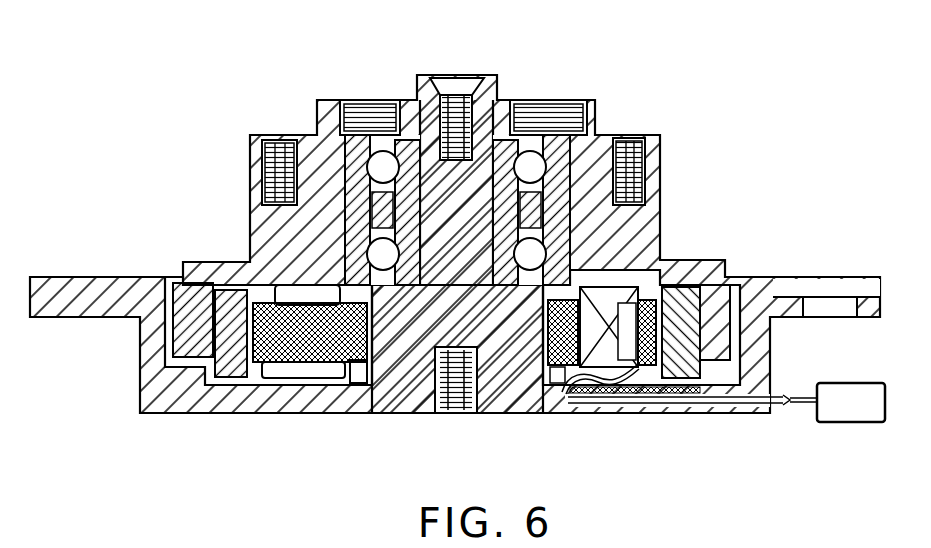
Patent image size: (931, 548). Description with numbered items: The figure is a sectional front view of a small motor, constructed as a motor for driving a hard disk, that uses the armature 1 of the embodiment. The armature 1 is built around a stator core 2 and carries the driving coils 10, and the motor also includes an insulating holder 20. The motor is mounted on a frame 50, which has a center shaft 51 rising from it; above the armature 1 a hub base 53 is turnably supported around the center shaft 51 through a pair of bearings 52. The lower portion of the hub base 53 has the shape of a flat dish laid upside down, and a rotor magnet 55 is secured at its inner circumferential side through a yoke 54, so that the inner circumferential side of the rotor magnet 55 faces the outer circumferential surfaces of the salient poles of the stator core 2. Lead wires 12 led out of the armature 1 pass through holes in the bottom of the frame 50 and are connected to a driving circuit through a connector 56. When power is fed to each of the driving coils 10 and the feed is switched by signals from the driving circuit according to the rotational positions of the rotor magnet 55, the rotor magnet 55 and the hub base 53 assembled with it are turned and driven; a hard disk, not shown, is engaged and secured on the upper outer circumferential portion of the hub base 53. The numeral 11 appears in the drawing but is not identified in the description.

The armature 1 is at (347, 372).
The stator core 2 is at (383, 358).
The driving coils 10 is at (293, 378).
The sensor element 11 is at (657, 262).
The lead wires 12 is at (568, 403).
The insulating holder 20 is at (665, 282).
The frame 50 is at (407, 378).
The center shaft 51 is at (481, 98).
The bearings 52 is at (318, 110).
The hub base 53 is at (650, 133).
The yoke 54 is at (702, 400).
The rotor magnet 55 is at (676, 378).
The connector 56 is at (855, 408).